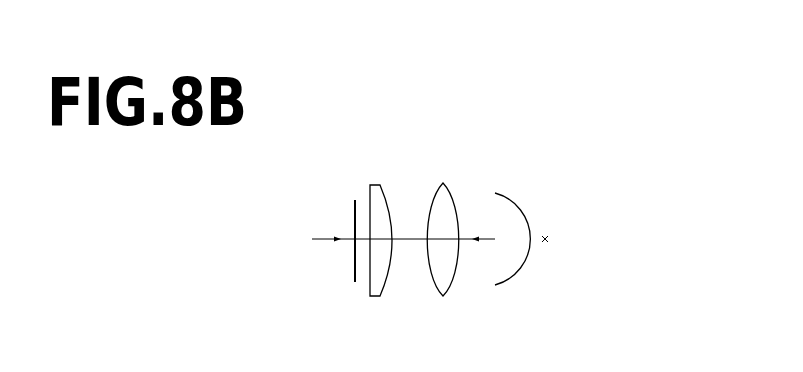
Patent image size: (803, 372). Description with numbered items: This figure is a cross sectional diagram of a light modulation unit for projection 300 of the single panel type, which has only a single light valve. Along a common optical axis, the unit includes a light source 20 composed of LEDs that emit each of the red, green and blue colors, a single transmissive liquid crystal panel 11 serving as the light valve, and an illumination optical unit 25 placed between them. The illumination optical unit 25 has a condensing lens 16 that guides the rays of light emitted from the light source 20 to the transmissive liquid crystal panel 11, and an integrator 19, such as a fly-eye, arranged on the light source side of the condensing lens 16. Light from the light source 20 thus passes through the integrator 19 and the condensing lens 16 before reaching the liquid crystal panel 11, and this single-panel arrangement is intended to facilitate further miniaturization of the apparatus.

The liquid crystal panel 11 is at (355, 207).
The condensing lens 16 is at (372, 183).
The integrator 19 is at (441, 183).
The light source 20 is at (511, 196).
The illumination optical unit 25 is at (462, 133).
The light modulation unit for projection 300 is at (571, 103).